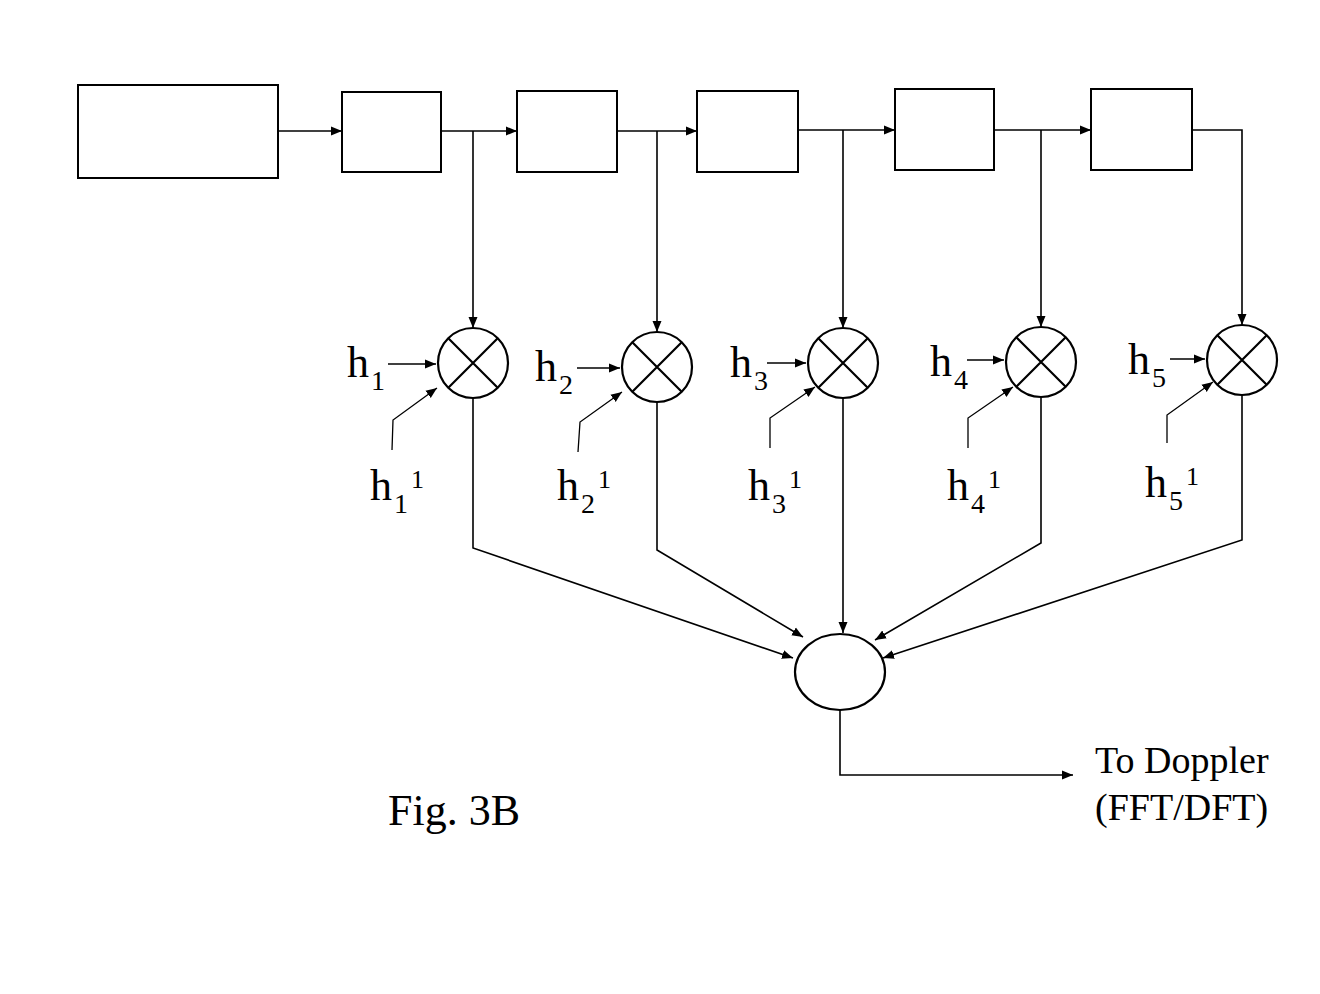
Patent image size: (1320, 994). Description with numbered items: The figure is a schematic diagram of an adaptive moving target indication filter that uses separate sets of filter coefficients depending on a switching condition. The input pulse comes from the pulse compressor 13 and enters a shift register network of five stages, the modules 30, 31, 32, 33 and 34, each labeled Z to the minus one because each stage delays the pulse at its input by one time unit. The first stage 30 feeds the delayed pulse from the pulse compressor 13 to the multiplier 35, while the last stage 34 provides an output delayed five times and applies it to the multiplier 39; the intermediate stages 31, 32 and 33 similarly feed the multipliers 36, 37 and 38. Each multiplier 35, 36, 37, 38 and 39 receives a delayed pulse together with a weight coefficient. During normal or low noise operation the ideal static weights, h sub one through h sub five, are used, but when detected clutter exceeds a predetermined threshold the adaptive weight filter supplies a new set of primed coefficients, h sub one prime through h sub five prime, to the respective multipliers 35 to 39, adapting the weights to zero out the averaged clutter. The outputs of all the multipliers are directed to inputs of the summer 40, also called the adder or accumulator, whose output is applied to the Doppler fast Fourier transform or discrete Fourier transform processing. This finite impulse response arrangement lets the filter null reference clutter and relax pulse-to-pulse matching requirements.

The pulse compressor 13 is at (222, 78).
The first stage of shift register 30 is at (408, 85).
The second stage of shift register 31 is at (570, 83).
The third stage of shift register 32 is at (752, 85).
The fourth stage of shift register 33 is at (935, 86).
The last stage of shift register 34 is at (1157, 85).
The multiplier 35 is at (497, 327).
The multiplier 36 is at (678, 330).
The multiplier 37 is at (872, 325).
The multiplier 38 is at (1063, 325).
The multiplier 39 is at (1270, 322).
The summer 40 is at (797, 698).